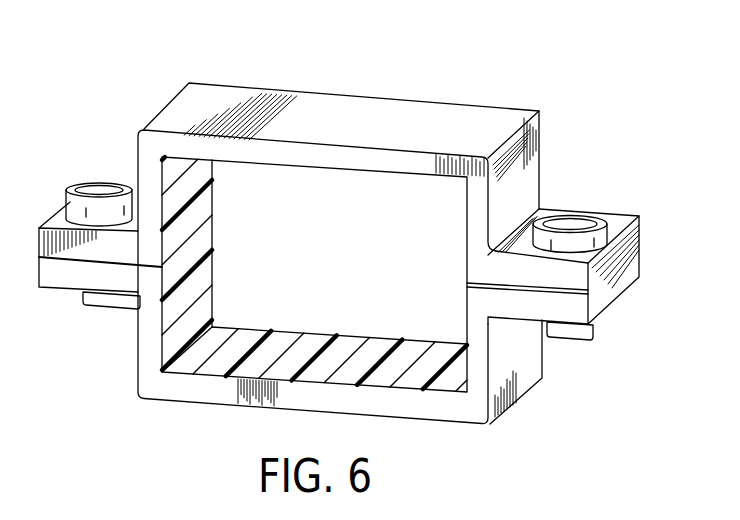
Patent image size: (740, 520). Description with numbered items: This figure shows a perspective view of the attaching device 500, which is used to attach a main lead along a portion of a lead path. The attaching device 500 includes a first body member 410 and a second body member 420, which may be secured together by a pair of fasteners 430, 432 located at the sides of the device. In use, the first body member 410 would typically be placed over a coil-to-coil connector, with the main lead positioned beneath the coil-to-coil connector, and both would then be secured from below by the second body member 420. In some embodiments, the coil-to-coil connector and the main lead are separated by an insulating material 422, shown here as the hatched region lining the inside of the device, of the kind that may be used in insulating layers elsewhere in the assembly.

The attaching device 500 is at (558, 93).
The first body member 410 is at (207, 100).
The second body member 420 is at (228, 375).
The insulating material 422 is at (377, 355).
The fastener 430 is at (110, 192).
The fastener 432 is at (577, 221).